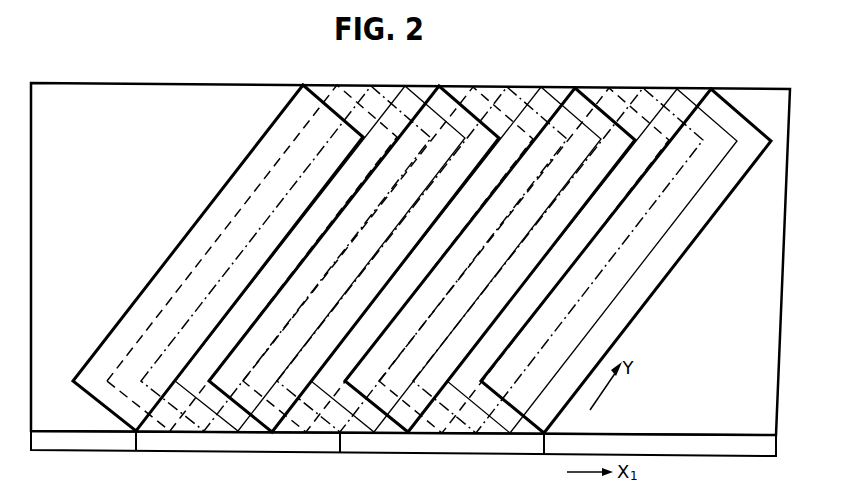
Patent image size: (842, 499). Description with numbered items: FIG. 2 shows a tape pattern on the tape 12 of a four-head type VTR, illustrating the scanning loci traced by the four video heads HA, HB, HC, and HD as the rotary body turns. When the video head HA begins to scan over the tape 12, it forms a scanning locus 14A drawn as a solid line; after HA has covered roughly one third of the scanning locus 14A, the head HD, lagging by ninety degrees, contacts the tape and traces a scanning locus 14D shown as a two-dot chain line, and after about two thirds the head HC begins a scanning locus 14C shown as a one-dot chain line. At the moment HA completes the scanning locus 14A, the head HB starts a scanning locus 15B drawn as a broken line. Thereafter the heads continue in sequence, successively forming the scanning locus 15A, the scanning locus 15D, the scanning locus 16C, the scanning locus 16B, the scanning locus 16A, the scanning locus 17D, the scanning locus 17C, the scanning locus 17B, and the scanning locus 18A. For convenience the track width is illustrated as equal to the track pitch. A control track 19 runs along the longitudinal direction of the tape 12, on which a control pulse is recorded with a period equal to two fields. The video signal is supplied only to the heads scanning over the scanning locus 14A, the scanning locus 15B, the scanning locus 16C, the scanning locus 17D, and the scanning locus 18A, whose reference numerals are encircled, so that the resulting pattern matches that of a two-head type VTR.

The tape 12 is at (148, 83).
The control track 19 is at (80, 443).
The scanning locus 18A is at (316, 90).
The scanning locus 17B is at (357, 90).
The scanning locus 17C is at (192, 421).
The scanning locus 17D is at (410, 90).
The scanning locus 16A is at (458, 90).
The scanning locus 16B is at (290, 430).
The scanning locus 16C is at (520, 90).
The scanning locus 15D is at (564, 90).
The scanning locus 15A is at (397, 433).
The scanning locus 15B is at (616, 90).
The scanning locus 14C is at (662, 90).
The scanning locus 14D is at (497, 425).
The scanning locus 14A is at (728, 102).